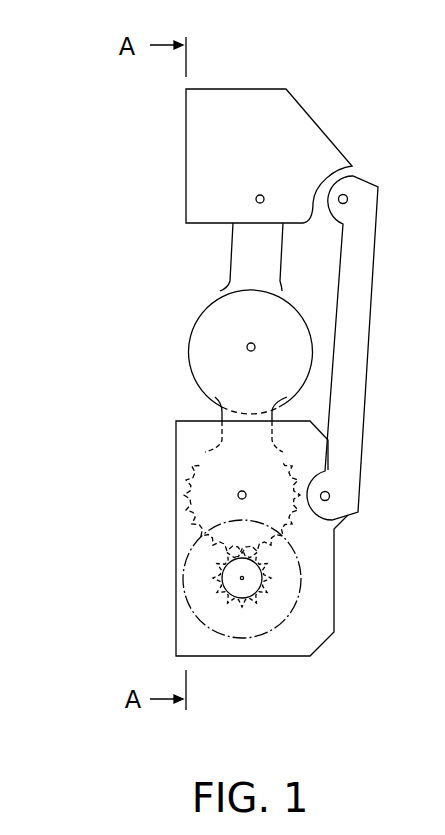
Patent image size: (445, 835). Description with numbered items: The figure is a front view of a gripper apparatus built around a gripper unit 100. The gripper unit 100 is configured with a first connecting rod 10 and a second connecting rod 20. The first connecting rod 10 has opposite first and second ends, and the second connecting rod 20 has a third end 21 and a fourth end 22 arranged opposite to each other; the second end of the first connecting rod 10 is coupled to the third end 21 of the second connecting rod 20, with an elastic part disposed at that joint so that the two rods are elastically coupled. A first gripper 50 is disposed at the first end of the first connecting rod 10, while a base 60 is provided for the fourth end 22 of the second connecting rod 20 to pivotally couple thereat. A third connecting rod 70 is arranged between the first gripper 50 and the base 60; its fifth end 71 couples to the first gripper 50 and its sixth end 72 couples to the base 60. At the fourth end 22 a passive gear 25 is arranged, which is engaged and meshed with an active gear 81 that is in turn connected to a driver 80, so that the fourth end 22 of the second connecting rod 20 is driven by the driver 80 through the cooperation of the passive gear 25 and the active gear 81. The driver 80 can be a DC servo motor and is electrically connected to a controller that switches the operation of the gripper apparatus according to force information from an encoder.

The gripper unit 100 is at (328, 66).
The first gripper 50 is at (196, 155).
The first connecting rod 10 is at (252, 258).
The second connecting rod 20 is at (109, 330).
The third end 21 is at (205, 343).
The fourth end 22 is at (215, 482).
The passive gear 25 is at (178, 500).
The base 60 is at (313, 572).
The third connecting rod 70 is at (355, 352).
The fifth end 71 is at (360, 203).
The sixth end 72 is at (338, 494).
The driver 80 is at (287, 613).
The active gear 81 is at (213, 578).